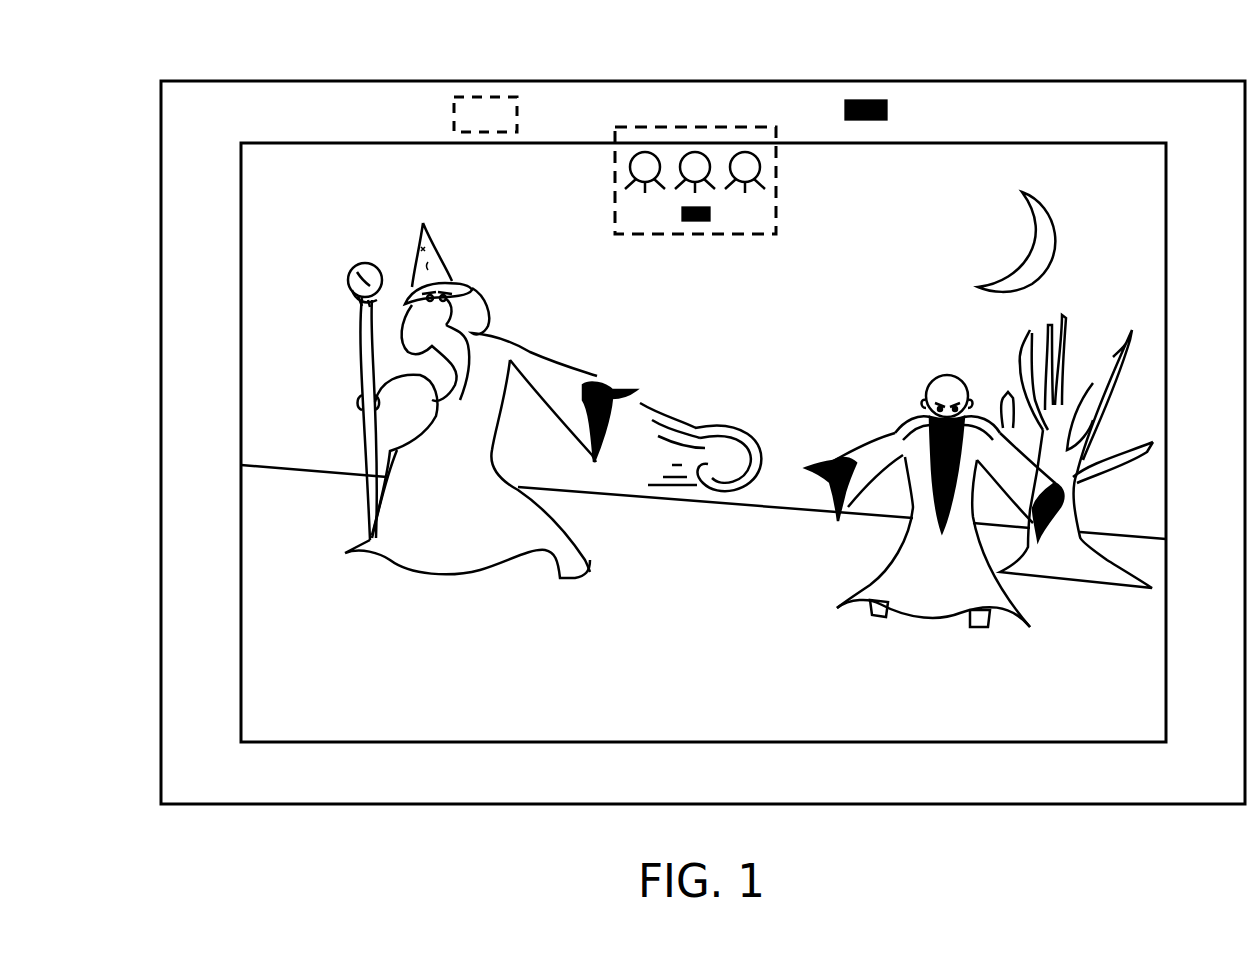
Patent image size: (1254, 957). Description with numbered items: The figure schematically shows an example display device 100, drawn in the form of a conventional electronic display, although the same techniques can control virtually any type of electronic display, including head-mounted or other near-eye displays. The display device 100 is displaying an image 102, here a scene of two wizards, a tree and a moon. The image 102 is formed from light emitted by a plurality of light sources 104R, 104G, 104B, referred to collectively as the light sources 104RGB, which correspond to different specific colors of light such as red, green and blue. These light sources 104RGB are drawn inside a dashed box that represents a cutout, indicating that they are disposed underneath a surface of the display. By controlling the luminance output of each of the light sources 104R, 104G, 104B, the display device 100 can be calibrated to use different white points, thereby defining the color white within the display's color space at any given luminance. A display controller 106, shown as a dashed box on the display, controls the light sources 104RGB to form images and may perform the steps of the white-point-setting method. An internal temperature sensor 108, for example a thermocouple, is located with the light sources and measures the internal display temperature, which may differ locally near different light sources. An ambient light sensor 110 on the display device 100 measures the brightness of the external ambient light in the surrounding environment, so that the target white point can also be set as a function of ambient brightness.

The display device 100 is at (208, 80).
The image 102 is at (354, 205).
The plurality of light sources 104RGB is at (674, 156).
The red light source 104R is at (638, 151).
The green light source 104G is at (697, 151).
The blue light source 104B is at (745, 151).
The display controller 106 is at (454, 102).
The internal temperature sensor 108 is at (678, 218).
The ambient light sensor 110 is at (887, 105).